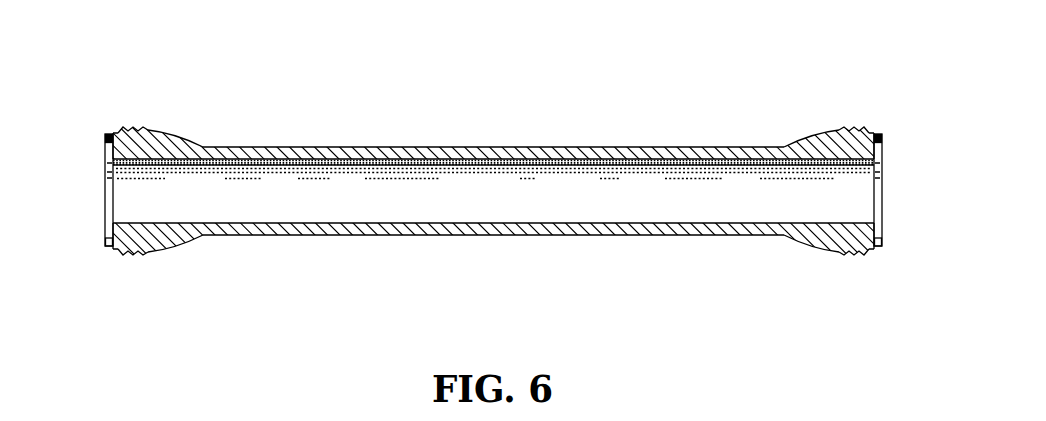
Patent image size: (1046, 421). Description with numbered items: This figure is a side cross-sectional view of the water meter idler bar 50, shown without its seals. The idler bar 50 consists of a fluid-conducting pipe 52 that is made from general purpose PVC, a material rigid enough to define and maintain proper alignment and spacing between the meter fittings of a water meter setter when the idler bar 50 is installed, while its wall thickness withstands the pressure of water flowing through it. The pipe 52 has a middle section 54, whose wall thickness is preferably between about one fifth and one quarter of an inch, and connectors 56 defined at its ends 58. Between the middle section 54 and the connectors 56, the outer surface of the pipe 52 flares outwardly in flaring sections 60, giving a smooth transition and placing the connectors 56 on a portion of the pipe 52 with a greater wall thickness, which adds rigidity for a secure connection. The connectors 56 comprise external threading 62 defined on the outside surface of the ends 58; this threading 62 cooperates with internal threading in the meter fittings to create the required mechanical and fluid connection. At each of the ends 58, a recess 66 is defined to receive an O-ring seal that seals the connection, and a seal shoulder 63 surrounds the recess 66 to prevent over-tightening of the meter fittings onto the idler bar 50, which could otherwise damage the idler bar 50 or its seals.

The water meter idler bar 50 is at (647, 62).
The fluid-conducting pipe 52 is at (523, 156).
The middle section 54 is at (436, 142).
The connectors 56 is at (142, 118).
The ends 58 is at (94, 192).
The flaring sections 60 is at (185, 129).
The external threading 62 is at (124, 126).
The seal shoulders 63 is at (107, 246).
The recesses 66 is at (105, 136).